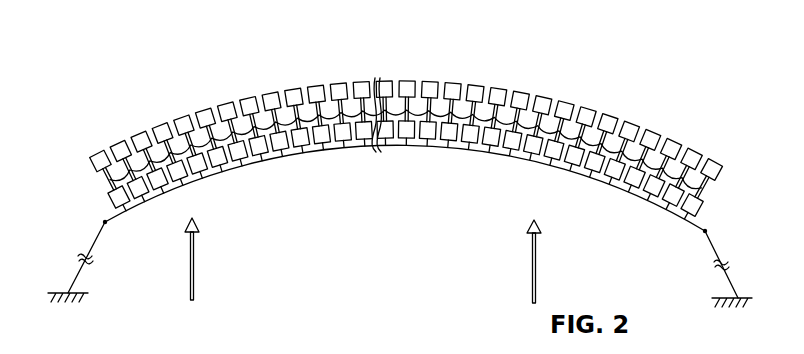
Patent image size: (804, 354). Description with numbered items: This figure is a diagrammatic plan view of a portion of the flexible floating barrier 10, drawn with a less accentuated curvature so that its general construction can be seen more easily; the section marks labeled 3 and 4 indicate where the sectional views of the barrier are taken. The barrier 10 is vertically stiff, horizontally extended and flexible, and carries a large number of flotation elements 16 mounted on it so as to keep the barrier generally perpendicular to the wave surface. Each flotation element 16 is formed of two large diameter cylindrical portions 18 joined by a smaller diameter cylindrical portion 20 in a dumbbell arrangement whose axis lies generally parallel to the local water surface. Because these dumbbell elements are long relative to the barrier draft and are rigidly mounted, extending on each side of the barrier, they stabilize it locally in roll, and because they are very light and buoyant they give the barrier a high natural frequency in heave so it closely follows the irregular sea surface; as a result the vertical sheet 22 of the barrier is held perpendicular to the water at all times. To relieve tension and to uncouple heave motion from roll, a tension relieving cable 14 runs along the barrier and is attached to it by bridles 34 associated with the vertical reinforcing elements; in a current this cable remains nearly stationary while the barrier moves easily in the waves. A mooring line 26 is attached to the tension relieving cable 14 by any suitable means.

The barrier 10 is at (588, 90).
The tension relieving cable 14 is at (134, 208).
The flotation element 16 is at (102, 145).
The large diameter cylindrical portion 18 is at (86, 163).
The smaller diameter cylindrical portion 20 is at (100, 178).
The vertical sheet 22 is at (127, 170).
The mooring line 26 is at (92, 251).
The bridle 34 is at (105, 223).
The section line 3- 3 is at (397, 152).
The section line 4- 4 is at (315, 165).